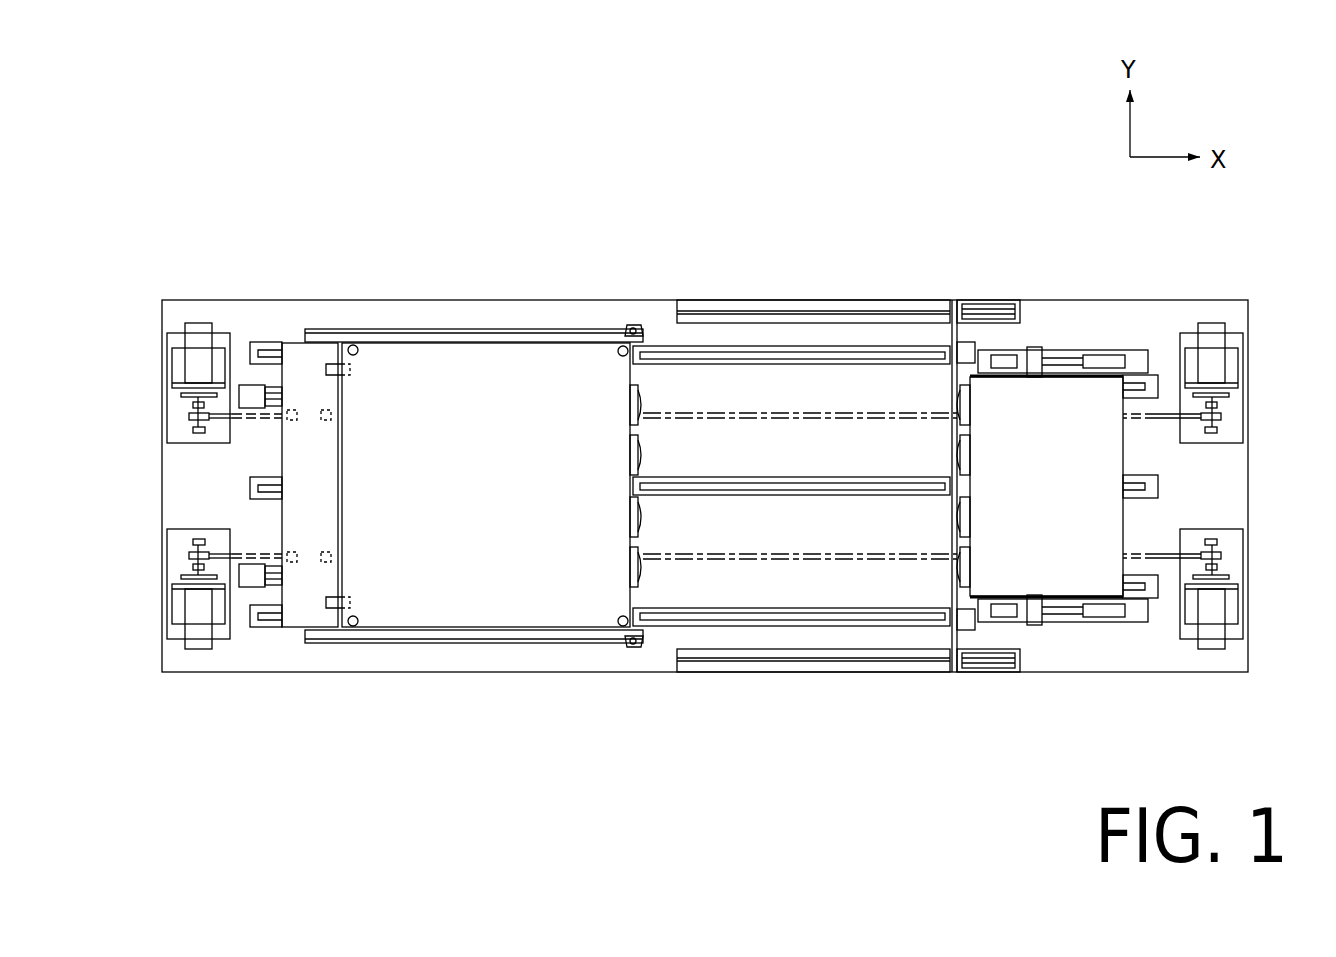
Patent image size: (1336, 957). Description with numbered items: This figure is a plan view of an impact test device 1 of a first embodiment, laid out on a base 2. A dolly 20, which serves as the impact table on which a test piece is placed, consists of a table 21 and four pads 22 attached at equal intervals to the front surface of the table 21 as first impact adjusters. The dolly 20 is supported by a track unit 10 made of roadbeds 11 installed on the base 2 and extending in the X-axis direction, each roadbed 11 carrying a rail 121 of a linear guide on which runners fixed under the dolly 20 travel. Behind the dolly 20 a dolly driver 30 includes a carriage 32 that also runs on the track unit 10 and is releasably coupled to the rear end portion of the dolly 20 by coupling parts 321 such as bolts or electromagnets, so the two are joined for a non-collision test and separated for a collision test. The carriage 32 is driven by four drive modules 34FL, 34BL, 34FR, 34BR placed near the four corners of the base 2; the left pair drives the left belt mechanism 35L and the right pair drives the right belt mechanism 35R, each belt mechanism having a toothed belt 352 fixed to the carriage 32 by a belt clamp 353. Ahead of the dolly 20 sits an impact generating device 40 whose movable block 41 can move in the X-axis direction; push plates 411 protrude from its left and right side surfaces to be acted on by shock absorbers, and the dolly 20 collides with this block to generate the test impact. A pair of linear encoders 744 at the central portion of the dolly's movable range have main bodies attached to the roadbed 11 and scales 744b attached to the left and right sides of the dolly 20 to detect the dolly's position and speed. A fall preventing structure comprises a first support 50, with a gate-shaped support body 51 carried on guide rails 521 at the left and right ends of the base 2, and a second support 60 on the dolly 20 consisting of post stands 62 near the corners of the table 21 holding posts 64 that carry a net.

The impact test device 1 is at (190, 145).
The base 2 is at (1130, 673).
The track unit 10 is at (826, 402).
The roadbed 11 is at (725, 345).
The rail 121 is at (902, 232).
The dolly 20 is at (525, 326).
The table 21 is at (572, 348).
The pad 22 is at (638, 388).
The dolly driver 30 is at (373, 224).
The carriage 32 is at (296, 352).
The coupling part 321 is at (352, 612).
The drive module 34BL is at (197, 322).
The drive module 34BR is at (197, 650).
The drive module 34FL is at (1210, 322).
The drive module 34FR is at (1210, 650).
The belt mechanism 35L is at (236, 412).
The belt mechanism 35R is at (232, 560).
The toothed belt 352 is at (797, 555).
The belt clamp 353 is at (318, 563).
The impact generating device 40 is at (1063, 342).
The movable block 41 is at (1115, 456).
The push plate 411 is at (1035, 626).
The first support 50 is at (987, 675).
The support body 51 is at (948, 581).
The guide rail 521 is at (822, 668).
The second support 60 is at (488, 402).
The post stand 62 is at (360, 350).
The post 64 is at (623, 486).
The linear encoder 744 is at (636, 650).
The scale 744b is at (505, 645).